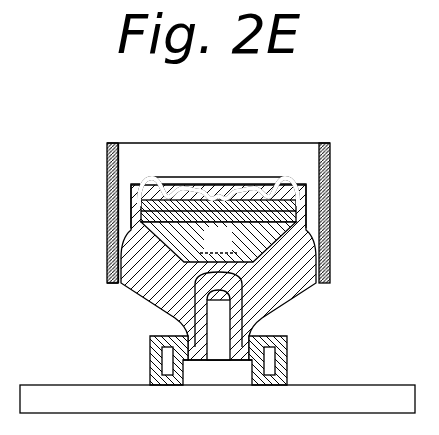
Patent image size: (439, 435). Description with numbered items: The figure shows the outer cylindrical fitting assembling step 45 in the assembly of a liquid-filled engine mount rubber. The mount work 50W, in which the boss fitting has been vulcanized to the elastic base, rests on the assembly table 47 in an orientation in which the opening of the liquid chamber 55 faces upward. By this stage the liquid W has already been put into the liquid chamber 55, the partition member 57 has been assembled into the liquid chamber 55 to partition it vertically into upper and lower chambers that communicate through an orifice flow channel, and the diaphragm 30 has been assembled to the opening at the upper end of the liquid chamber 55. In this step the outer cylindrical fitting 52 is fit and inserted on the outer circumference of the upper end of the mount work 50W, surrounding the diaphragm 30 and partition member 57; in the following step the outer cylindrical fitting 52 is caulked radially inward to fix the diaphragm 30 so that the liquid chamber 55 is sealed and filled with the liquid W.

The outer cylindrical fitting assembling step 45 is at (146, 140).
The diaphragm 30 is at (150, 177).
The partition member 57 is at (231, 195).
The outer cylindrical fitting 52 is at (330, 201).
The mount work 50W is at (107, 254).
The liquid chamber 55 is at (150, 292).
The assembly table 47 is at (330, 385).
The liquid W is at (218, 231).